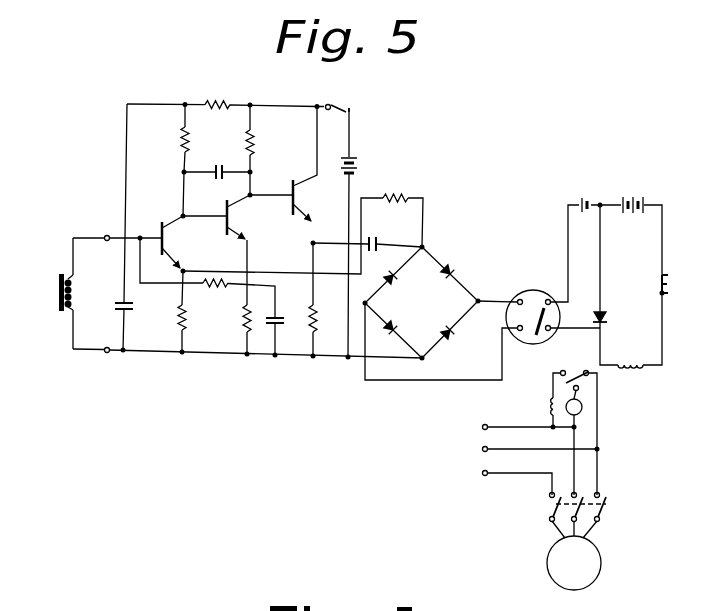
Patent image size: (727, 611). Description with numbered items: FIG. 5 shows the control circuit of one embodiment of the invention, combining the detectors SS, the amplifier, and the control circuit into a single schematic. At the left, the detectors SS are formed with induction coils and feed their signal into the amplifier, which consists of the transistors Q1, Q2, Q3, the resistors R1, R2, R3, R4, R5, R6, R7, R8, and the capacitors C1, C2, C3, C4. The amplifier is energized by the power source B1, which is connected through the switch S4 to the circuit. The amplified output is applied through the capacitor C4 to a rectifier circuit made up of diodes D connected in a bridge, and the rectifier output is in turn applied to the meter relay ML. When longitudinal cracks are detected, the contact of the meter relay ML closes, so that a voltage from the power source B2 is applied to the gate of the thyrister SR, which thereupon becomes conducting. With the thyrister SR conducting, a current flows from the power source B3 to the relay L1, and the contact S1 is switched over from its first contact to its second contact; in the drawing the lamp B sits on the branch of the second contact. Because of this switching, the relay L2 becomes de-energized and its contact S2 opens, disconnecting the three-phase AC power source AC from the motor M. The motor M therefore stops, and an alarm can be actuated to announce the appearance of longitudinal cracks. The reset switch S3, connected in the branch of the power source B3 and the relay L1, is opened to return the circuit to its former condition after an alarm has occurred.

The detectors SS is at (79, 292).
The capacitor C1 is at (138, 311).
The capacitor C2 is at (214, 162).
The capacitor C3 is at (286, 321).
The capacitor C4 is at (380, 233).
The resistor R1 is at (215, 295).
The resistor R2 is at (172, 139).
The resistor R3 is at (196, 318).
The resistor R4 is at (218, 92).
The resistor R5 is at (265, 142).
The resistor R6 is at (234, 318).
The resistor R7 is at (326, 318).
The resistor R8 is at (395, 186).
The transistor Q1 is at (180, 242).
The transistor Q2 is at (246, 217).
The transistor Q3 is at (310, 164).
The contact S1 is at (568, 373).
The contact S2 is at (591, 507).
The reset switch S3 is at (649, 287).
The switch S4 is at (335, 96).
The power source B1 is at (362, 159).
The power source B2 is at (584, 193).
The power source B3 is at (632, 193).
The diodes D is at (421, 302).
The meter relay ML is at (533, 306).
The thyrister SR is at (614, 320).
The relay L1 is at (630, 356).
The relay L2 is at (537, 408).
The lamp bulb B is at (574, 407).
The three-phase AC power source AC is at (469, 450).
The motor M is at (574, 563).